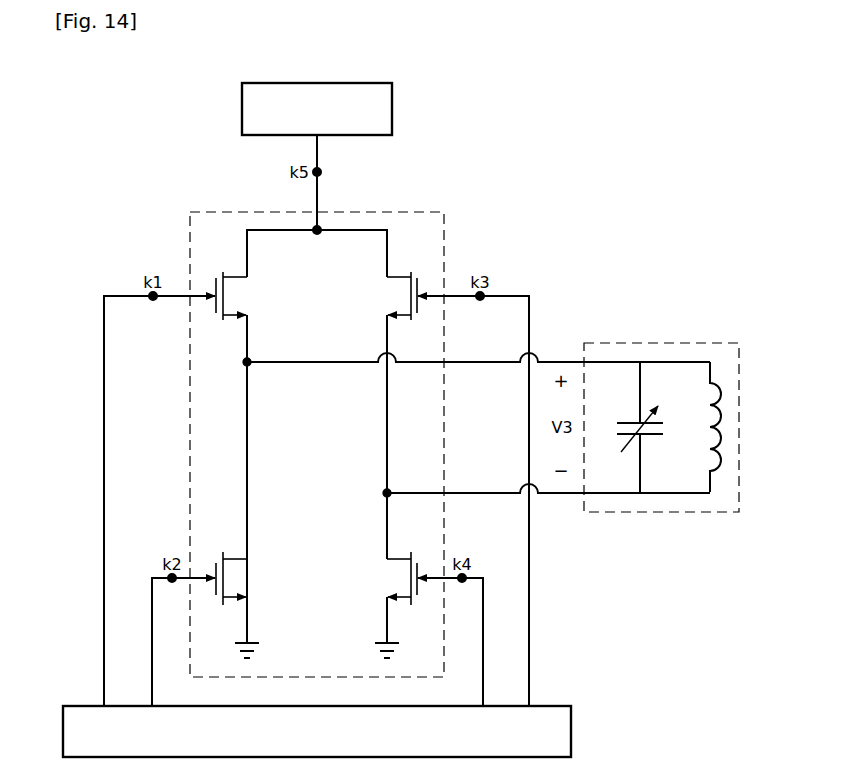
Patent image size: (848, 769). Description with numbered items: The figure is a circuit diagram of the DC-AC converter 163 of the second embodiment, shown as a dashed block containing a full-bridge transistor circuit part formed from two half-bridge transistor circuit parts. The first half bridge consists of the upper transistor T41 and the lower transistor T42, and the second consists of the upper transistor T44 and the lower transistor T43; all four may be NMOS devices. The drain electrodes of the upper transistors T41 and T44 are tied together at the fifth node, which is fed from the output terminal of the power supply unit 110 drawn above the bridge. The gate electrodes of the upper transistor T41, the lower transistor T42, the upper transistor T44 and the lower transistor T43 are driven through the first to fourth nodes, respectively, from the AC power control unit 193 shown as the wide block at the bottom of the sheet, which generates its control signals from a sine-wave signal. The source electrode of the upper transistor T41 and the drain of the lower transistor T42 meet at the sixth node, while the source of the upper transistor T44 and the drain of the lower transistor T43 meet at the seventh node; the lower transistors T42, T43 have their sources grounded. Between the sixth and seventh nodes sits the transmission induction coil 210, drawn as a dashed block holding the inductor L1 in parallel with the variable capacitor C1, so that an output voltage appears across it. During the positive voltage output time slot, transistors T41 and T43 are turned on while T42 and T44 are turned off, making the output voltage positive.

The power supply unit 110 is at (318, 83).
The DC-AC converter 163 is at (402, 212).
The transmission induction coil 210 is at (677, 343).
The AC power control unit 193 is at (571, 733).
The upper transistor T41 is at (249, 296).
The lower transistor T42 is at (249, 578).
The lower transistor T43 is at (384, 578).
The upper transistor T44 is at (385, 296).
The capacitor C1 is at (628, 427).
The inductor L1 is at (705, 427).